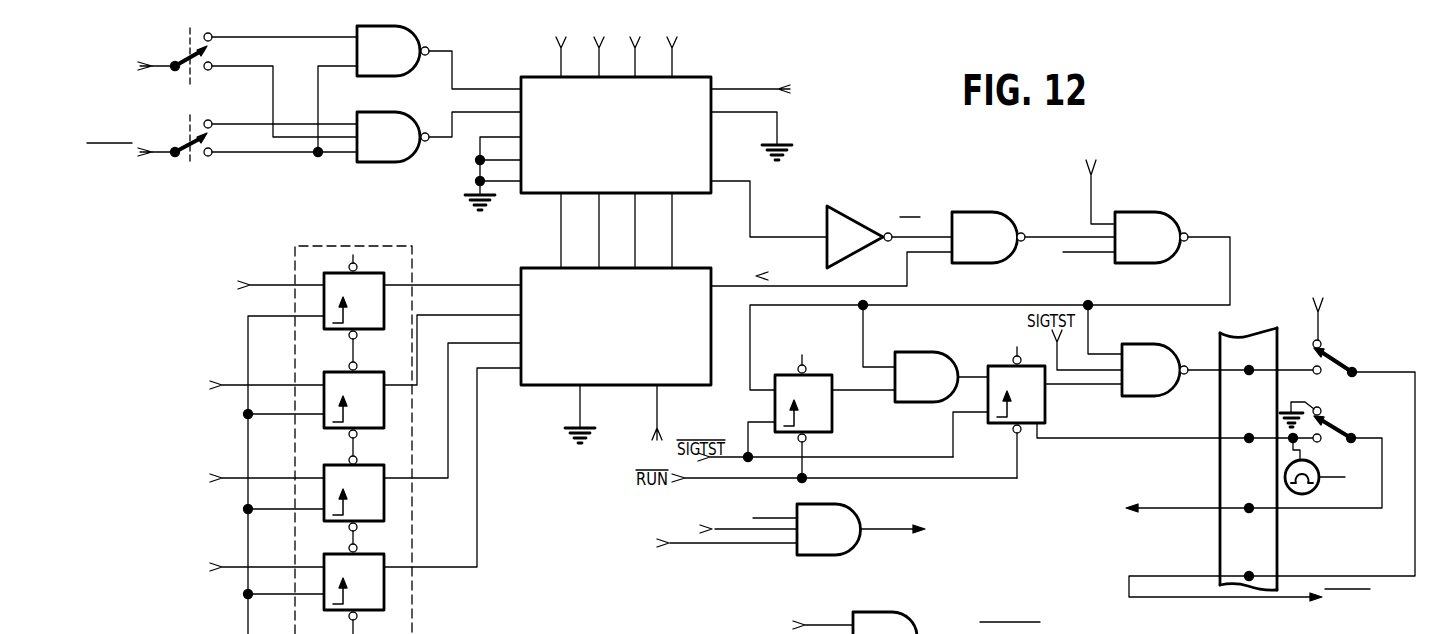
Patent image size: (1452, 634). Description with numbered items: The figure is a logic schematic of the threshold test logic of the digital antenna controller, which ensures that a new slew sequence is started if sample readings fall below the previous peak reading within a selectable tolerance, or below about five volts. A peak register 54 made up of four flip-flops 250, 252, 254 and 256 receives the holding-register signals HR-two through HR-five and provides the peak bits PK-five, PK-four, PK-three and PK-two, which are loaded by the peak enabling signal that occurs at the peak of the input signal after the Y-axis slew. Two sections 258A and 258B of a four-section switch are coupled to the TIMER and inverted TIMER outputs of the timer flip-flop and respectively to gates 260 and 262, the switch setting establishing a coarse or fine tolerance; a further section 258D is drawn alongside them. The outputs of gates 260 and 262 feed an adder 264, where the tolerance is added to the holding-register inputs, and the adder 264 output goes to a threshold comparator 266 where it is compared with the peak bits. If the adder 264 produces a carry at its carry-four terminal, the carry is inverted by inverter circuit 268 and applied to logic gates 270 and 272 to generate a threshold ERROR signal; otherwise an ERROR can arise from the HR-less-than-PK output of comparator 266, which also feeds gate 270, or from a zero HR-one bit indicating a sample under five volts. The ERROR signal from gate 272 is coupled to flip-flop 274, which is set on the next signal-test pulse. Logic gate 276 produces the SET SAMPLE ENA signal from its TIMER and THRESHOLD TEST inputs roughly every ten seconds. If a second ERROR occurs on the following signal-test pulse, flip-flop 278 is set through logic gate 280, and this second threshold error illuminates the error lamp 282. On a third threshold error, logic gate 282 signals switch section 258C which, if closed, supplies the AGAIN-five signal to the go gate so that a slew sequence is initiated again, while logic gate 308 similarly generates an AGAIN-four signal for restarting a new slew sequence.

The peak register 54 is at (415, 270).
The flip-flop 250 is at (361, 337).
The flip-flop 252 is at (361, 436).
The flip-flop 254 is at (361, 529).
The flip-flop 256 is at (361, 618).
The switch section 258A is at (186, 50).
The switch section 258B is at (186, 137).
The switch section 258C is at (1338, 366).
The switch section 258D is at (1336, 430).
The logic gate 260 is at (415, 35).
The logic gate 262 is at (415, 121).
The adder 264 is at (700, 77).
The threshold comparator 266 is at (668, 386).
The inverter circuit 268 is at (854, 223).
The logic gate 270 is at (1006, 223).
The logic gate 272 is at (1159, 223).
The flip-flop 274 is at (832, 415).
The logic gate 276 is at (851, 521).
The flip-flop 278 is at (1045, 419).
The logic gate 280 is at (945, 364).
The error lamp and logic gate 282 is at (1143, 397).
The logic gate 308 is at (904, 627).